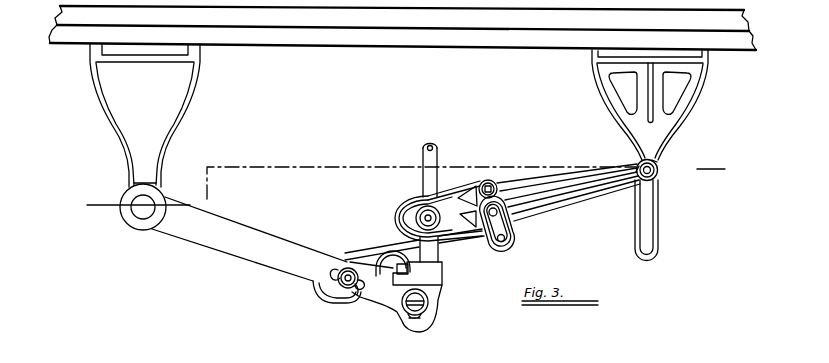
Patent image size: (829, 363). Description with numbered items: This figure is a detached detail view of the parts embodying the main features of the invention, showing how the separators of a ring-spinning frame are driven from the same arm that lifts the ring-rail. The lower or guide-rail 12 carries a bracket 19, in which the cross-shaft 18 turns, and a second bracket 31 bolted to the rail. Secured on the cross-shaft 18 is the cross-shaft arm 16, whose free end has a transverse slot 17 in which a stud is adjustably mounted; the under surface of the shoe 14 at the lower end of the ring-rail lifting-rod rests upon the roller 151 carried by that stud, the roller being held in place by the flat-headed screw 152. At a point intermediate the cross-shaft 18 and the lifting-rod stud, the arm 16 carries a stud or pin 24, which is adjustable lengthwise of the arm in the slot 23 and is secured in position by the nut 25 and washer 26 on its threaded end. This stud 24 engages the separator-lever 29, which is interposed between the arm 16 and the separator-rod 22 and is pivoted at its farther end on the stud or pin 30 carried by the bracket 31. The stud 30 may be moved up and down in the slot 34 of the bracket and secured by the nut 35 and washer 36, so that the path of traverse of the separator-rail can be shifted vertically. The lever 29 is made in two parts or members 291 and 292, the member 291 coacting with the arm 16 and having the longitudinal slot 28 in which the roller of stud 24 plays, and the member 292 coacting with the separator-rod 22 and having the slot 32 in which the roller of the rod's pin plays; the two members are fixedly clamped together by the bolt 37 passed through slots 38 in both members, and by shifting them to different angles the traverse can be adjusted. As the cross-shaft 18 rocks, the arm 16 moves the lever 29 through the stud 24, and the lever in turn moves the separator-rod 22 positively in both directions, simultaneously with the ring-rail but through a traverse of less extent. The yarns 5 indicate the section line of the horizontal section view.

The lower or guide-rail 12 is at (402, 28).
The bracket 19 is at (145, 115).
The bracket 31 is at (650, 105).
The yarns 5 is at (403, 187).
The cross-shaft 18 is at (143, 207).
The cross-shaft arm 16 is at (249, 239).
The stud or pin 24 is at (345, 302).
The transverse slot 17 is at (403, 318).
The member of separator-lever 291 is at (466, 244).
The member of separator-lever 292 is at (598, 181).
The separator-rod 22 is at (424, 160).
The slot 32 is at (405, 221).
The slots 38 is at (481, 186).
The bolt 37 is at (507, 215).
The separator-lever 29 is at (565, 179).
The stud or pin 30 is at (653, 177).
The nut 35 is at (638, 167).
The washer 36 is at (656, 160).
The slot 34 is at (651, 232).
The slot 28 is at (391, 252).
The shoe 14 is at (417, 273).
The nut 25 is at (352, 265).
The slot 23 is at (332, 272).
The washer 26 is at (354, 292).
The roller 151 is at (429, 303).
The flat-headed screw 152 is at (420, 317).